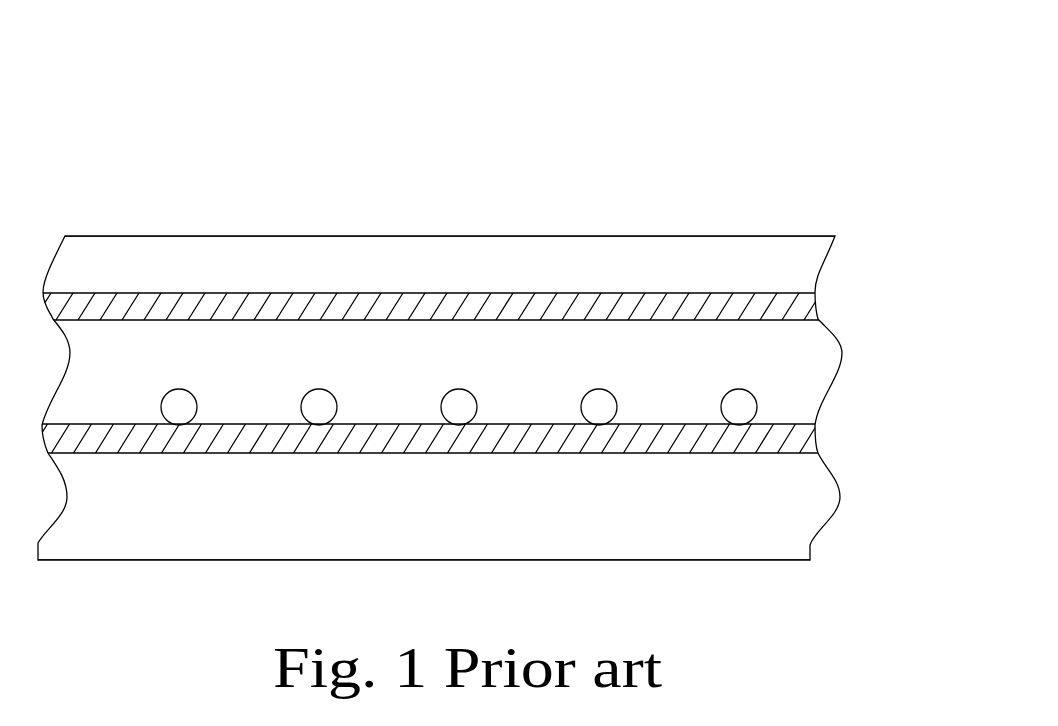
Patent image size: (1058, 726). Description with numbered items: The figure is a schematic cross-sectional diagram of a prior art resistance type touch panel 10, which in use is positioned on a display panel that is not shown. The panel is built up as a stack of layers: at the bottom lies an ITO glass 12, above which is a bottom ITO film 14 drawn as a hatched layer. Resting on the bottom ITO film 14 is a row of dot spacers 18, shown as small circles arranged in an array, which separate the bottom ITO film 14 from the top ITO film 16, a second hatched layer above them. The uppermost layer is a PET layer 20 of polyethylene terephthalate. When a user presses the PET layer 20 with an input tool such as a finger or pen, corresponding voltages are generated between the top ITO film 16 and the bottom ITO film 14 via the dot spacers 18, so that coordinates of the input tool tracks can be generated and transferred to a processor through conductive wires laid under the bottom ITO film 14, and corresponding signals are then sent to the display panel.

The resistance type touch panel 10 is at (683, 83).
The ITO glass 12 is at (430, 533).
The bottom ITO film 14 is at (803, 445).
The top ITO film 16 is at (803, 311).
The dot spacers 18 is at (740, 403).
The PET layer 20 is at (803, 262).